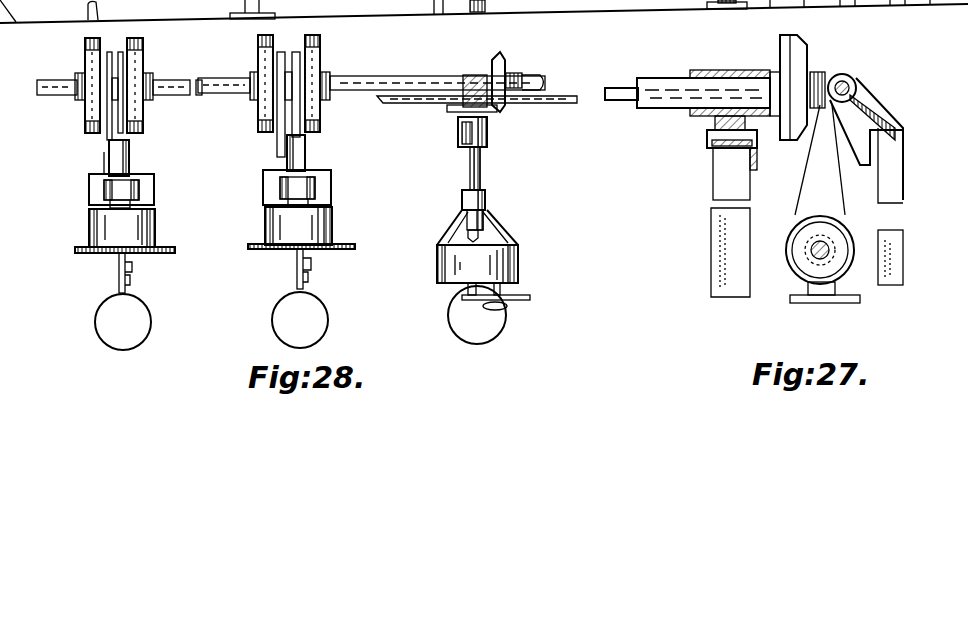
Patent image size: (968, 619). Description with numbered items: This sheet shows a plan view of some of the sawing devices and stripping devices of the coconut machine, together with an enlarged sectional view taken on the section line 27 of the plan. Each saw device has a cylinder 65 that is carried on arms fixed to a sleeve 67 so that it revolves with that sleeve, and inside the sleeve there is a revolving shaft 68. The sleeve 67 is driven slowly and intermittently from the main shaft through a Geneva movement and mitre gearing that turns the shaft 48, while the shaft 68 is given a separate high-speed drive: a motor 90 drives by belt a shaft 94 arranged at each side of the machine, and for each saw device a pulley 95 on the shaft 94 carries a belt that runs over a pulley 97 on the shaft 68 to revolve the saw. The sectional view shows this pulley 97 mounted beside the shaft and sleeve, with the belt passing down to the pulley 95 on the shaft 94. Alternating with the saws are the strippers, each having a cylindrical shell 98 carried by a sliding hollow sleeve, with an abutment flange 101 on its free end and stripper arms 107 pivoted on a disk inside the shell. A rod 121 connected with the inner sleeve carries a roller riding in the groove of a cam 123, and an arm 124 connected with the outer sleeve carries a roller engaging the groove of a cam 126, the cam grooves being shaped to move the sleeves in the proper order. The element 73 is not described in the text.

In FIG. 28, the section line 27 is at (487, 70).
In FIG. 28, the shaft 48 is at (390, 72).
In FIG. 28, the cylinder 65 is at (519, 256).
In FIG. 28, the sleeve 67 is at (482, 183).
In FIG. 27, the sleeve 67 is at (656, 108).
In FIG. 27, the revolving shaft 68 is at (614, 86).
In FIG. 28, the wheel hub 73 is at (505, 306).
In FIG. 27, the motor 90 is at (806, 0).
In FIG. 27, the shaft 94 is at (815, 249).
In FIG. 27, the pulley 95 is at (816, 224).
In FIG. 28, the pulley 97 is at (445, 105).
In FIG. 27, the pulley 97 is at (828, 76).
In FIG. 28, the cylindrical shell 98 is at (92, 238).
In FIG. 28, the abutment flange 101 is at (170, 248).
In FIG. 28, the stripper arm 107 is at (297, 268).
In FIG. 28, the rod 121 is at (128, 136).
In FIG. 28, the cam 123 is at (143, 52).
In FIG. 28, the arm 124 is at (106, 153).
In FIG. 28, the cam 126 is at (86, 50).